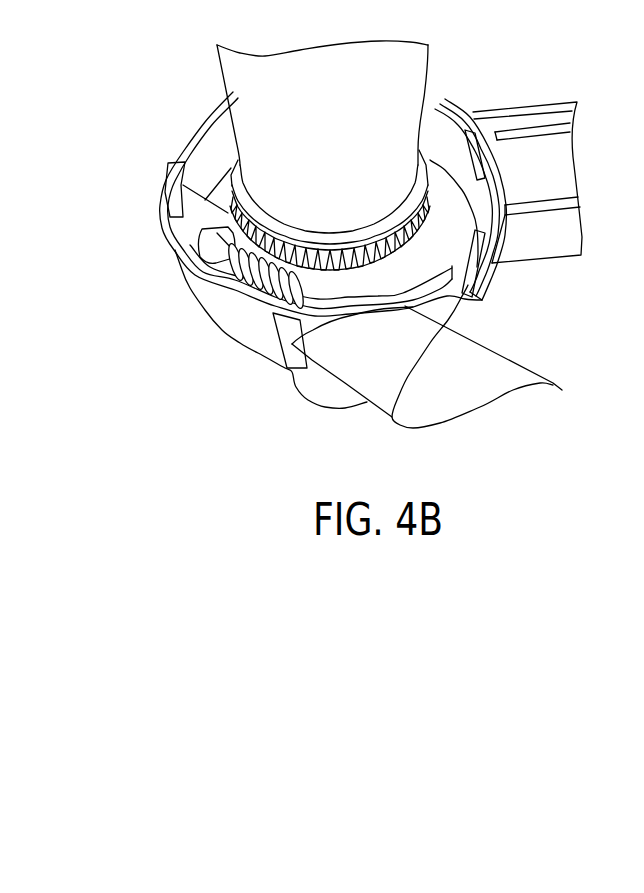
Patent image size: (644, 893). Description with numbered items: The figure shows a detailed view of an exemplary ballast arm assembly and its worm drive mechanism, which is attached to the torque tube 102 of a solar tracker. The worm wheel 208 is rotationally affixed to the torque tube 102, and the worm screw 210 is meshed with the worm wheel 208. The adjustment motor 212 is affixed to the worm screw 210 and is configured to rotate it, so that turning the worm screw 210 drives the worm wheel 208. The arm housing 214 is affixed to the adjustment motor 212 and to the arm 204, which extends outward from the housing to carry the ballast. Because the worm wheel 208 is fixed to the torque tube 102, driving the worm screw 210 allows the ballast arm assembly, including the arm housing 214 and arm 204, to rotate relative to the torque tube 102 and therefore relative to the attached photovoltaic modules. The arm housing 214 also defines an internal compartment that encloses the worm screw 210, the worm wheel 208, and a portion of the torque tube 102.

The torque tube 102 is at (228, 90).
The arm 204 is at (530, 103).
The worm wheel 208 is at (422, 230).
The worm screw 210 is at (223, 262).
The adjustment motor 212 is at (553, 385).
The arm housing 214 is at (240, 338).